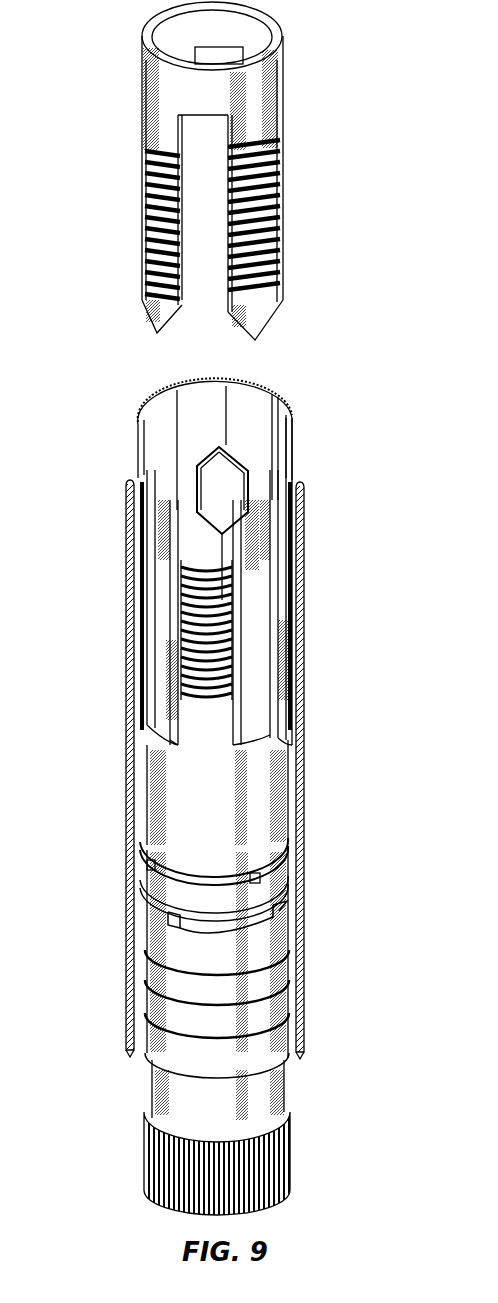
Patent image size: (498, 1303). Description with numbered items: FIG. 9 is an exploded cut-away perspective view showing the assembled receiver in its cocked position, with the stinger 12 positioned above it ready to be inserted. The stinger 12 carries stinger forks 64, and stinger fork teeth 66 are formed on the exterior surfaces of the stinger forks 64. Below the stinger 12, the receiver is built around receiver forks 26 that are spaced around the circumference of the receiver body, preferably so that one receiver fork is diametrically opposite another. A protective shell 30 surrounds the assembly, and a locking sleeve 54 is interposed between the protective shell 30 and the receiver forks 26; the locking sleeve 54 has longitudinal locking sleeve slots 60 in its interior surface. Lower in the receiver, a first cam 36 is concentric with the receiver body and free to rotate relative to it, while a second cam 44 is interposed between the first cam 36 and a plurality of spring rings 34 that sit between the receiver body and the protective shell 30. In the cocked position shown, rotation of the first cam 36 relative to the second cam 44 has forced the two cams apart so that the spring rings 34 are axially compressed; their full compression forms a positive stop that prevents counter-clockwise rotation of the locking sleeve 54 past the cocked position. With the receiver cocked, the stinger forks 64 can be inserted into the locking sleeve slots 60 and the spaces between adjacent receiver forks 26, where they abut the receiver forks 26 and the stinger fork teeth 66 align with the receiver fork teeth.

The stinger 12 is at (283, 63).
The stinger fork teeth 66 is at (148, 223).
The stinger forks 64 is at (148, 298).
The locking sleeve slots 60 is at (205, 408).
The locking sleeve 54 is at (272, 395).
The receiver forks 26 is at (283, 520).
The protective shell 30 is at (305, 636).
The first cam 36 is at (130, 876).
The second cam 44 is at (130, 909).
The spring rings 34 is at (130, 943).